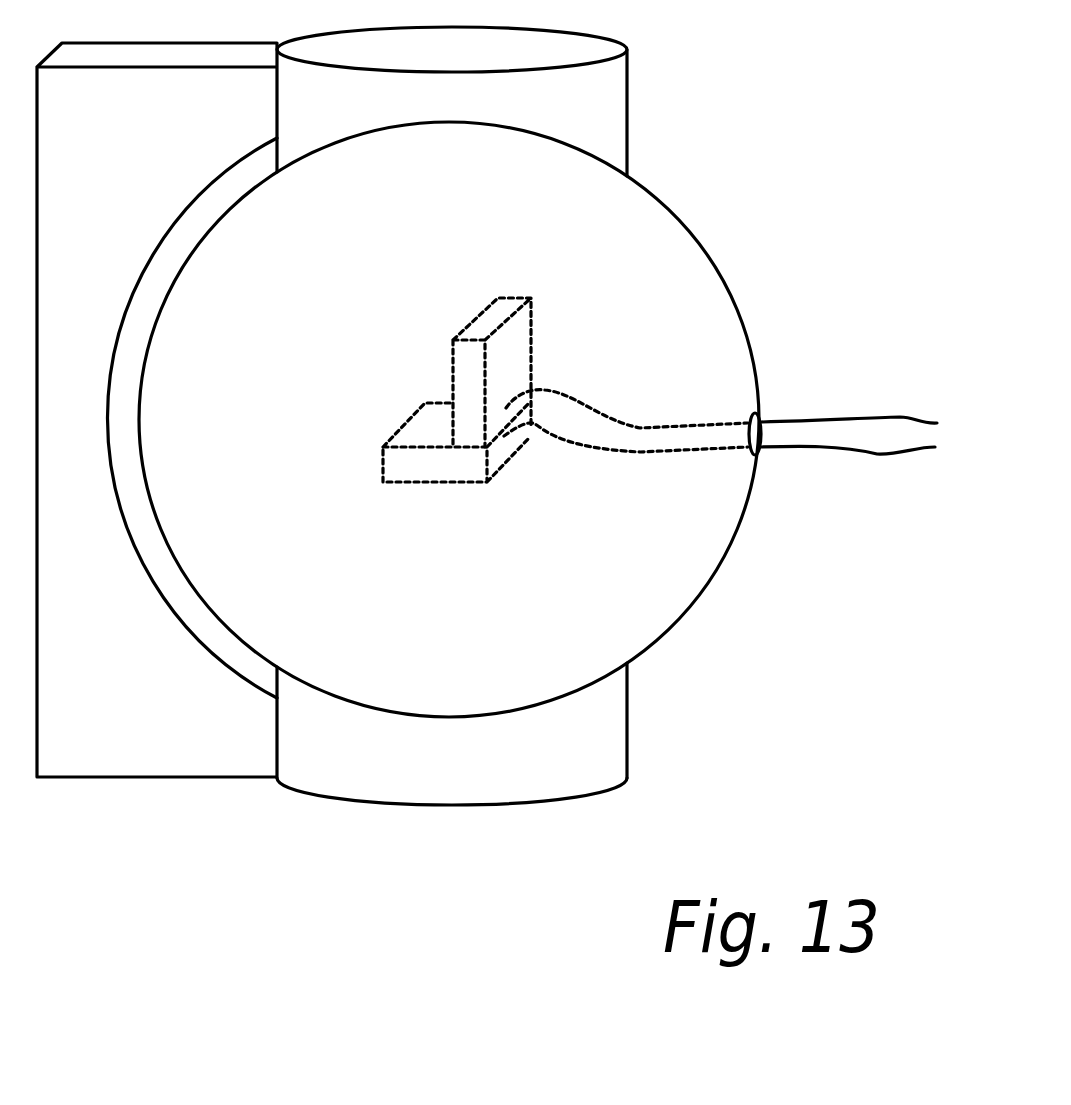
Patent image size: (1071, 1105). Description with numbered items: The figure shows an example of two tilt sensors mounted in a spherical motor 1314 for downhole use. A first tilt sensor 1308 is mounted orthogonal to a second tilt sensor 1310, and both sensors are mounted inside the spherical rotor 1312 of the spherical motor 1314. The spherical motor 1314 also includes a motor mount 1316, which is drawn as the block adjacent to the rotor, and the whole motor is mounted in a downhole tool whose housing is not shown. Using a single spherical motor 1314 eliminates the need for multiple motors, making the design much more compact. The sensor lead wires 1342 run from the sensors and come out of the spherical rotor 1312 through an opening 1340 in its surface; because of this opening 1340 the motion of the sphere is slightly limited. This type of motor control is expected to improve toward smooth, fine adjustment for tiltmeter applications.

The tilt sensor 1308 is at (432, 468).
The tilt sensor 1310 is at (505, 297).
The spherical rotor 1312 is at (637, 228).
The spherical motor 1314 is at (798, 675).
The motor mount 1316 is at (176, 725).
The opening 1340 is at (762, 413).
The sensor lead wires 1342 is at (791, 447).